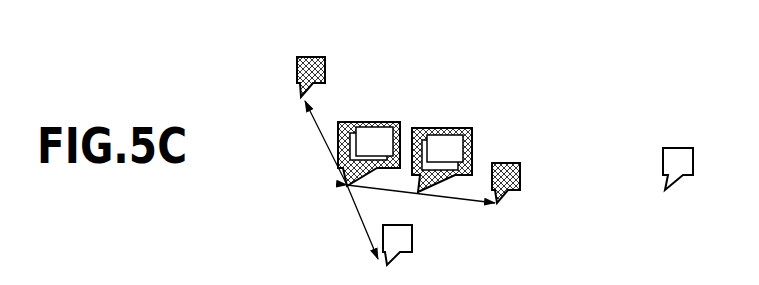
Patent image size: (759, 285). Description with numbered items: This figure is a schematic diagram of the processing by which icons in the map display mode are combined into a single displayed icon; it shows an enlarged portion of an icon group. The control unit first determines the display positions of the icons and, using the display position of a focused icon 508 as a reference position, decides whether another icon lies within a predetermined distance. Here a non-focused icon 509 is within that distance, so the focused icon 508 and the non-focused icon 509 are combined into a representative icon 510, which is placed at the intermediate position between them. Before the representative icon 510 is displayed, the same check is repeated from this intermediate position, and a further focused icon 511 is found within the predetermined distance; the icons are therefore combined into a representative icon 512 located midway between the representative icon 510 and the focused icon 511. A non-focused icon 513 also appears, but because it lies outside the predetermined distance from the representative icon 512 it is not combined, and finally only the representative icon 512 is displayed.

The focused icon 508 is at (312, 57).
The non-focused icon 509 is at (412, 238).
The representative icon 510 is at (373, 122).
The focused icon 511 is at (511, 163).
The representative icon 512 is at (450, 128).
The non-focused icon 513 is at (679, 148).